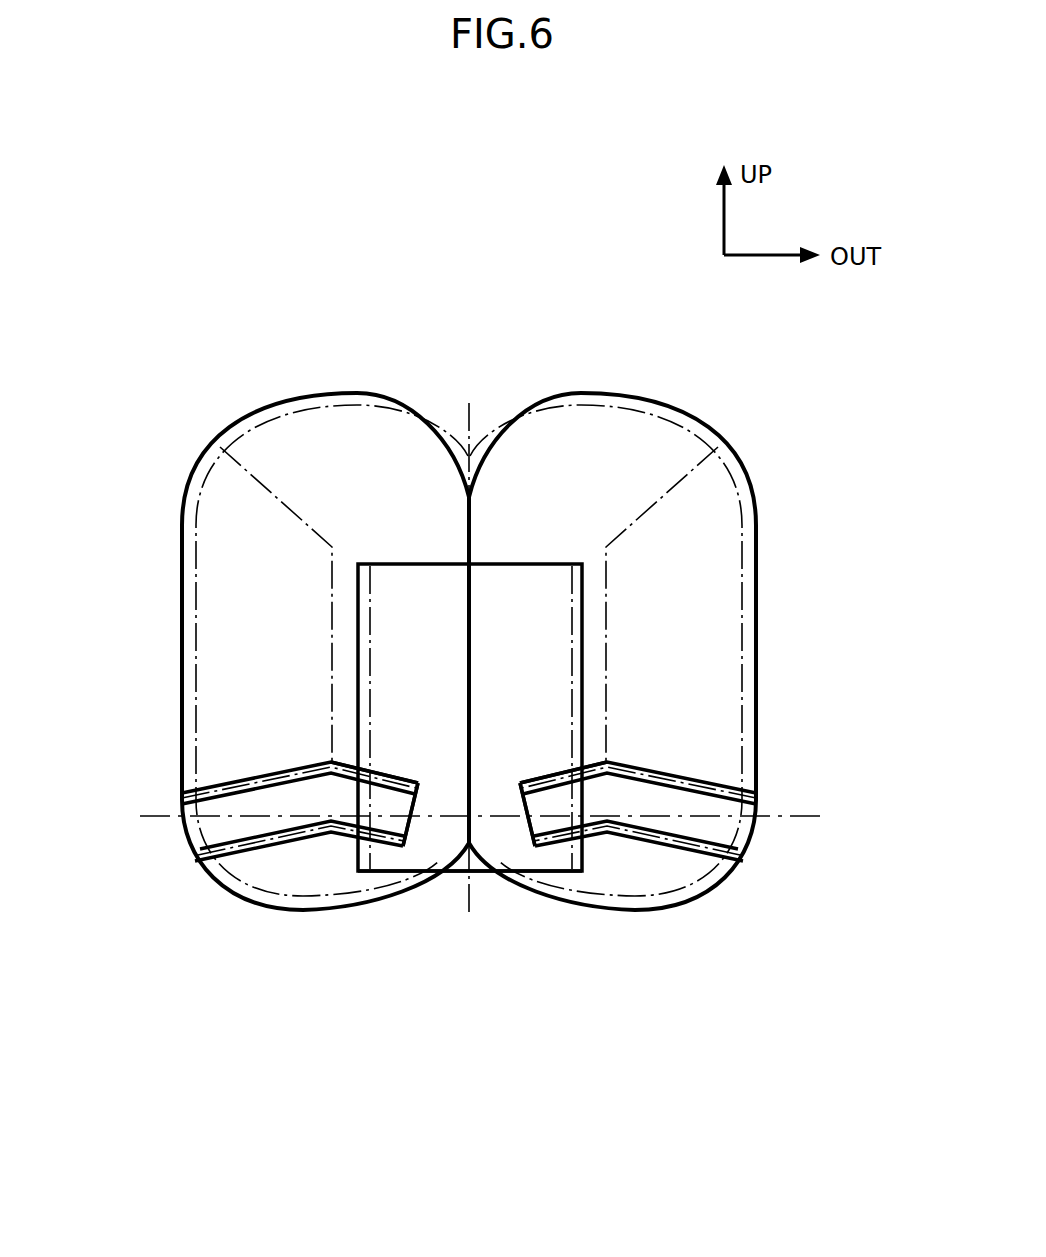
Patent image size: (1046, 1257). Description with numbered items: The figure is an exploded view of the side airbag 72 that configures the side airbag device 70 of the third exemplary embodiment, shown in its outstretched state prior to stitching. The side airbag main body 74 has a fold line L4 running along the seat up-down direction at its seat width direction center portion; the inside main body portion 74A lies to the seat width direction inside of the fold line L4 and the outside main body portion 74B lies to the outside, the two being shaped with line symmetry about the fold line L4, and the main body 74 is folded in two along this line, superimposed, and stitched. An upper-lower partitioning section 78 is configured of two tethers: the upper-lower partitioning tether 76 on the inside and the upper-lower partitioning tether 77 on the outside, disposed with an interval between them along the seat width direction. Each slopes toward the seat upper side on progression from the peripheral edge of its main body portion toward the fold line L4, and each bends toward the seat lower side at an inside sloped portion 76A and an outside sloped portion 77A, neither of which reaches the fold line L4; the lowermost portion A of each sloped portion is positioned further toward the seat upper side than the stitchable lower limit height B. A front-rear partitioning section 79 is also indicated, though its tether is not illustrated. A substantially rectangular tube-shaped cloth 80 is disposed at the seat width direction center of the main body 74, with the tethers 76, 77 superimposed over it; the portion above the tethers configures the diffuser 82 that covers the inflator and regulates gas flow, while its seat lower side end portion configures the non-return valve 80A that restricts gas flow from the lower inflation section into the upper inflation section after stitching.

The side airbag device 70 is at (422, 303).
The side airbag 72 is at (508, 1047).
The side airbag main body 74 is at (263, 907).
The inside main body portion 74A is at (330, 437).
The outside main body portion 74B is at (590, 438).
The upper-lower partitioning tether 76 is at (296, 840).
The inside sloped portion 76A is at (394, 775).
The upper-lower partitioning tether 77 is at (635, 840).
The outside sloped portion 77A is at (545, 770).
The upper-lower partitioning section 78 is at (469, 858).
The front-rear partitioning section 79 is at (672, 487).
The tube-shaped cloth 80 is at (586, 623).
The diffuser 82 is at (470, 717).
The non-return valve 80A is at (425, 840).
The lowermost portion A is at (518, 786).
The stitchable lower limit height B is at (813, 816).
The fold line L4 is at (470, 420).